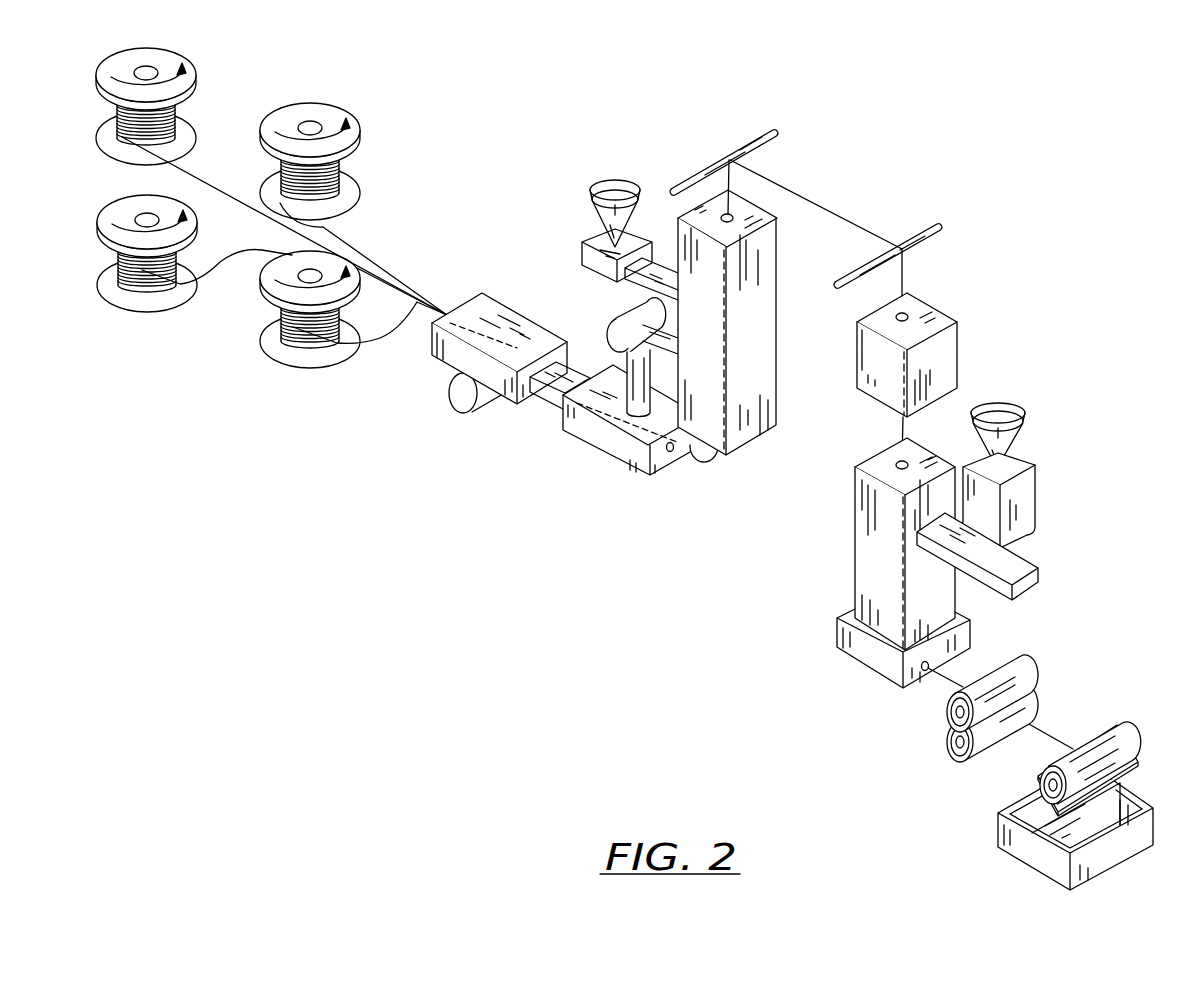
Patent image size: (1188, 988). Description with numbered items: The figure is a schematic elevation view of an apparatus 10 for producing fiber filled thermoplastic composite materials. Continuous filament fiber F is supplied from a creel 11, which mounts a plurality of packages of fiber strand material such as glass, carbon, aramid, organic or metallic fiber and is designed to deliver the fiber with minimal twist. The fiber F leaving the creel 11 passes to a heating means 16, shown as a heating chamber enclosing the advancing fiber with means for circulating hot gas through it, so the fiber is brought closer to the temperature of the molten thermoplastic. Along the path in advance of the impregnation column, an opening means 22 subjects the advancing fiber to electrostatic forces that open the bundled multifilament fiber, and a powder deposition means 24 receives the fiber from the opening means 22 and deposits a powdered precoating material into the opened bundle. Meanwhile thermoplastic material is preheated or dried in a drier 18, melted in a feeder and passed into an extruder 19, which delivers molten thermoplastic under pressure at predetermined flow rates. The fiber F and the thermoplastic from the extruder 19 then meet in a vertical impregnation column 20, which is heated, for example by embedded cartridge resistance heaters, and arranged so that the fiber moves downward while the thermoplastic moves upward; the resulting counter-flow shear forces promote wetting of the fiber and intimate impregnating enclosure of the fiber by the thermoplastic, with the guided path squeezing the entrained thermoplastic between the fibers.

The apparatus 10 is at (752, 600).
The creel 11 is at (226, 372).
The heating means 16 is at (497, 305).
The drier 18 is at (1035, 500).
The extruder 19 is at (988, 587).
The impregnation column 20 is at (858, 548).
The opening means 22 is at (600, 450).
The powder deposition means 24 is at (767, 275).
The fiber F is at (797, 192).